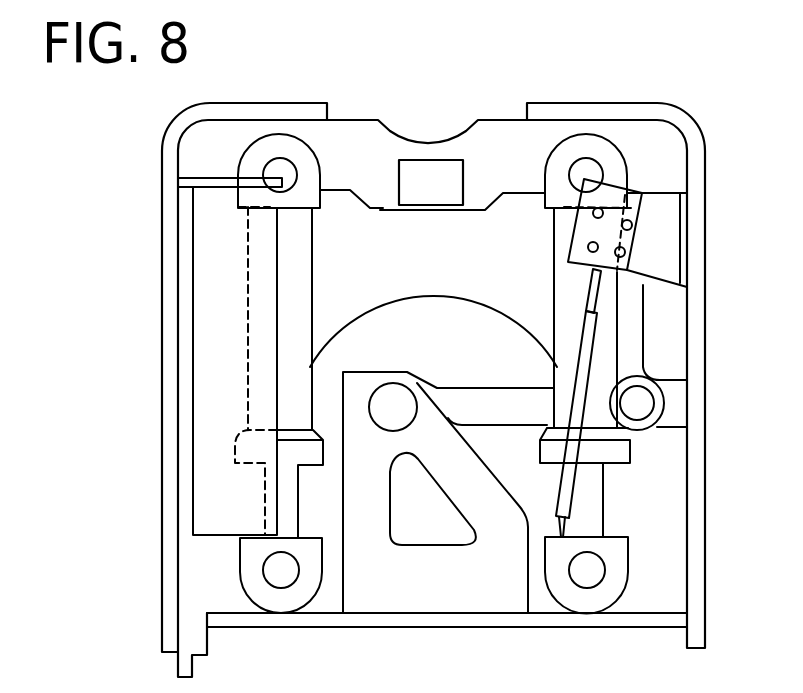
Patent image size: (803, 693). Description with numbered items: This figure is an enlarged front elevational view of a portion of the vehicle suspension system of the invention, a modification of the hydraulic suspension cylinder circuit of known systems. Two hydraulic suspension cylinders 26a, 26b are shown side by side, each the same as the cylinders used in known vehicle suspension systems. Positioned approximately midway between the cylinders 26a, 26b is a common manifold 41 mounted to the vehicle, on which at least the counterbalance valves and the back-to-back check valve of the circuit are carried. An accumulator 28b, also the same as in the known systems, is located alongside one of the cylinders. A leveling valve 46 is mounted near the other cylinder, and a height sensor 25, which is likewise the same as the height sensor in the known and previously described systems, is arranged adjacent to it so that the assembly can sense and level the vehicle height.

The height sensor 25 is at (590, 333).
The cylinder 26a is at (550, 280).
The cylinder 26b is at (312, 262).
The accumulator 28b is at (215, 288).
The common manifold 41 is at (437, 197).
The leveling valve 46 is at (630, 208).